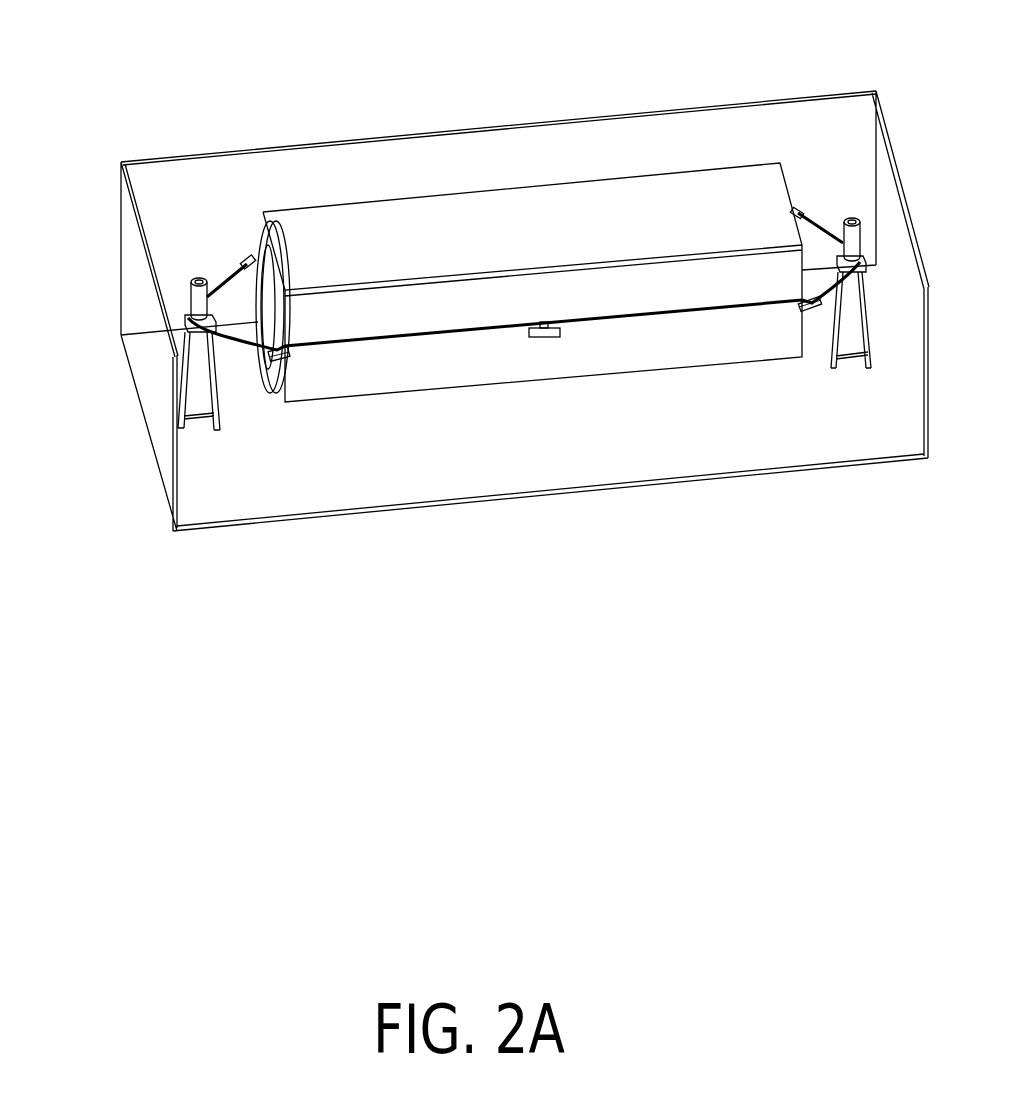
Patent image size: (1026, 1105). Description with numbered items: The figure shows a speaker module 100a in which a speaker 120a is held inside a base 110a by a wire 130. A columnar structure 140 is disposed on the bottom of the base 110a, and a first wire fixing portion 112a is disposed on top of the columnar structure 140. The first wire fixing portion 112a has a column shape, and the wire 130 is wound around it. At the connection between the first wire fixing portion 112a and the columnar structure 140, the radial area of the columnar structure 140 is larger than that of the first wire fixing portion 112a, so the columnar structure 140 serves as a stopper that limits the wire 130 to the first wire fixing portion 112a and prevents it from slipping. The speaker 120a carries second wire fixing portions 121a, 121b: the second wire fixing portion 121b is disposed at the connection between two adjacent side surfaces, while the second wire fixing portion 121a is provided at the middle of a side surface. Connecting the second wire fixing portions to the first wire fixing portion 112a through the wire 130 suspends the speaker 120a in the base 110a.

The speaker module 100a is at (125, 37).
The base 110a is at (405, 160).
The first wire fixing portion 112a is at (192, 298).
The speaker 120a is at (582, 230).
The second wire fixing portion 121a is at (543, 337).
The second wire fixing portion 121b is at (275, 365).
The wire 130 is at (383, 343).
The columnar structure 140 is at (193, 393).